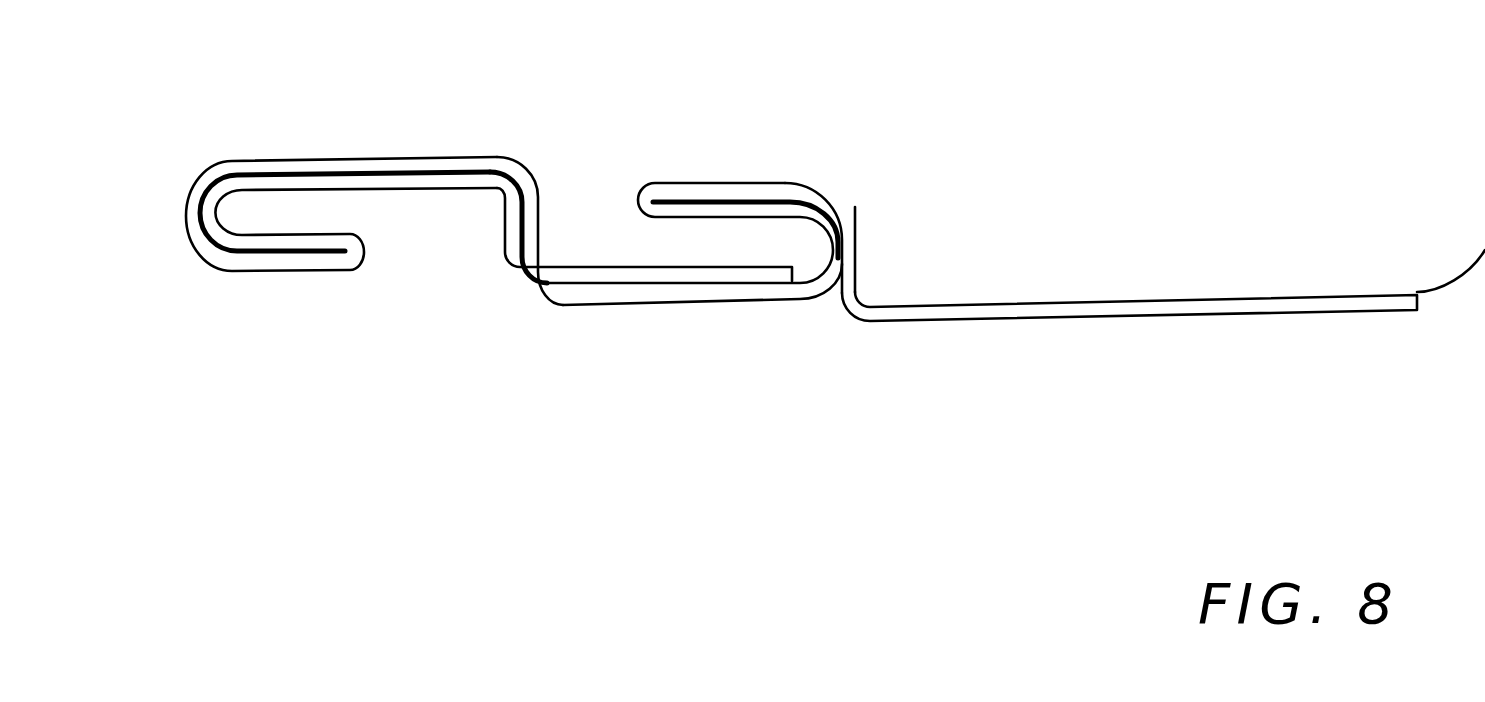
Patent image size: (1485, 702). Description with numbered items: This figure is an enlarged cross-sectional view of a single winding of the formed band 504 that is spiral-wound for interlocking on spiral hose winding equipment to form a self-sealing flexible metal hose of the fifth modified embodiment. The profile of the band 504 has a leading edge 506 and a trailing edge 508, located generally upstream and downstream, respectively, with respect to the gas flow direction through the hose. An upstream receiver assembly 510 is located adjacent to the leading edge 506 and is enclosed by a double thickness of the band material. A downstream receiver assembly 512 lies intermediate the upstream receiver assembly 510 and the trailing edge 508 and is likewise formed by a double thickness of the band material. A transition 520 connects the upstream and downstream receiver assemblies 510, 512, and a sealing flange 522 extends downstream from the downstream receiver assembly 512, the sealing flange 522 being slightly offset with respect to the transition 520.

The band 504 is at (953, 160).
The leading edge 506 is at (183, 197).
The trailing edge 508 is at (1484, 236).
The upstream receiver assembly 510 is at (514, 155).
The downstream receiver assembly 512 is at (860, 196).
The transition 520 is at (633, 305).
The sealing flange 522 is at (1132, 318).